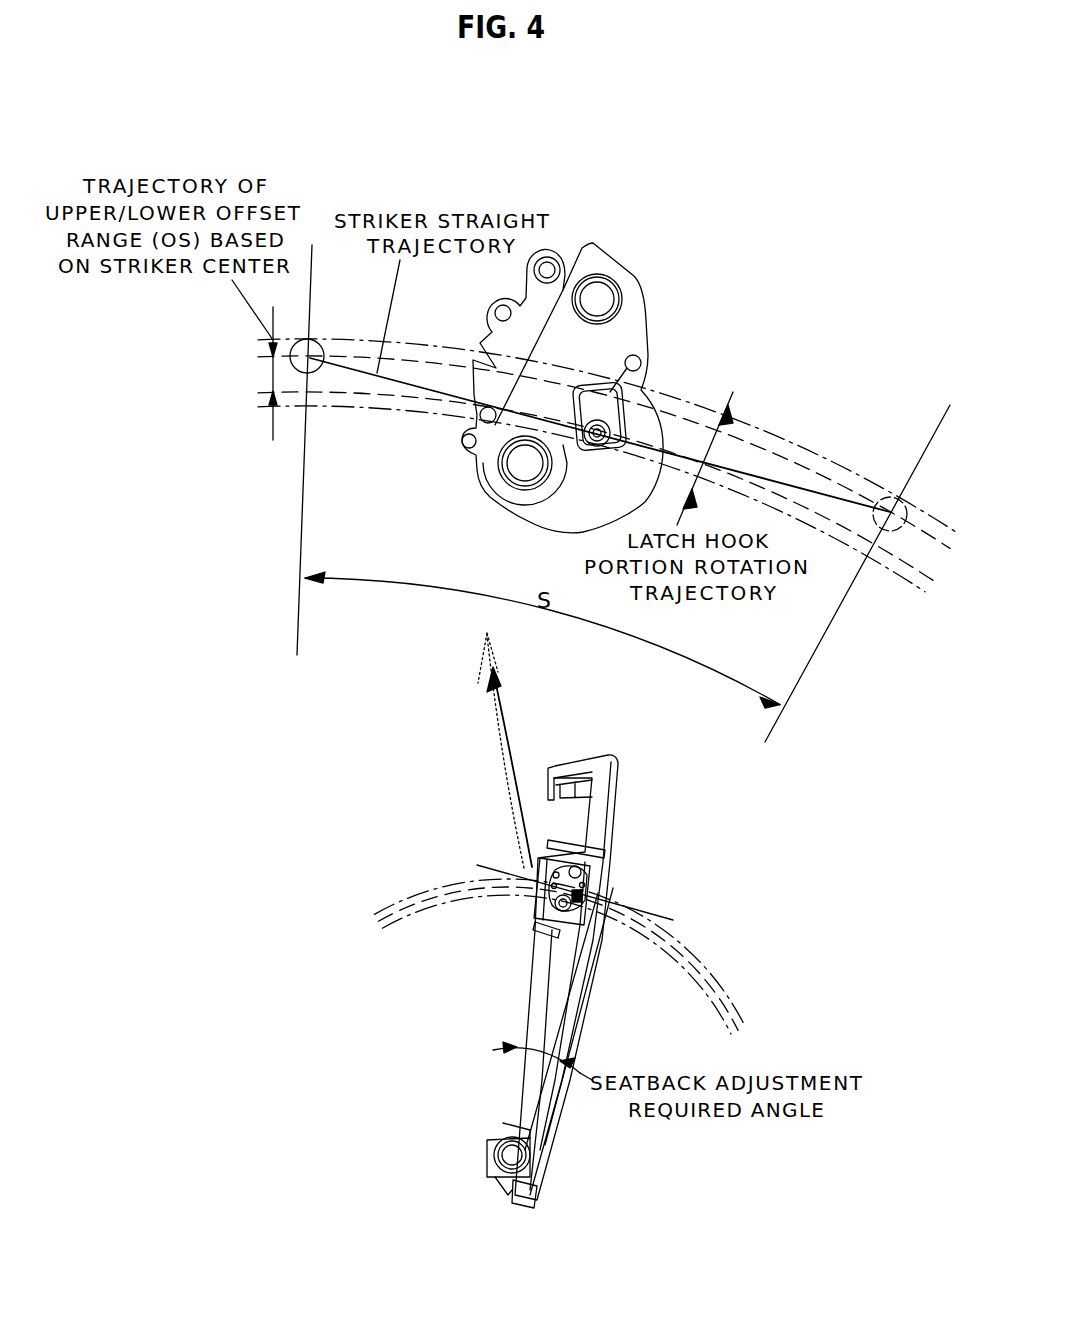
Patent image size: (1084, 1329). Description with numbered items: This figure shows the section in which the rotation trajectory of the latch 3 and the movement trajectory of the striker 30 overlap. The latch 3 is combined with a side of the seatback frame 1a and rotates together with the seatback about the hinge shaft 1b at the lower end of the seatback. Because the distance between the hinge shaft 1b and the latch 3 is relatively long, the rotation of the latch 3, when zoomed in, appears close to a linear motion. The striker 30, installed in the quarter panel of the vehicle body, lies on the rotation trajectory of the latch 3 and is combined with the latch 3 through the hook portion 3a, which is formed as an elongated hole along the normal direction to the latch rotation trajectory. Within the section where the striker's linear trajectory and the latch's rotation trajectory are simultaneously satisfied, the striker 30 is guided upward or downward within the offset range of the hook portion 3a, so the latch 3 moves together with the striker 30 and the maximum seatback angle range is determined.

The latch 3 is at (602, 377).
The hook portion 3a is at (641, 361).
The striker 30 is at (608, 428).
The seatback frame 1a is at (562, 965).
The hinge shaft 1b is at (478, 1153).